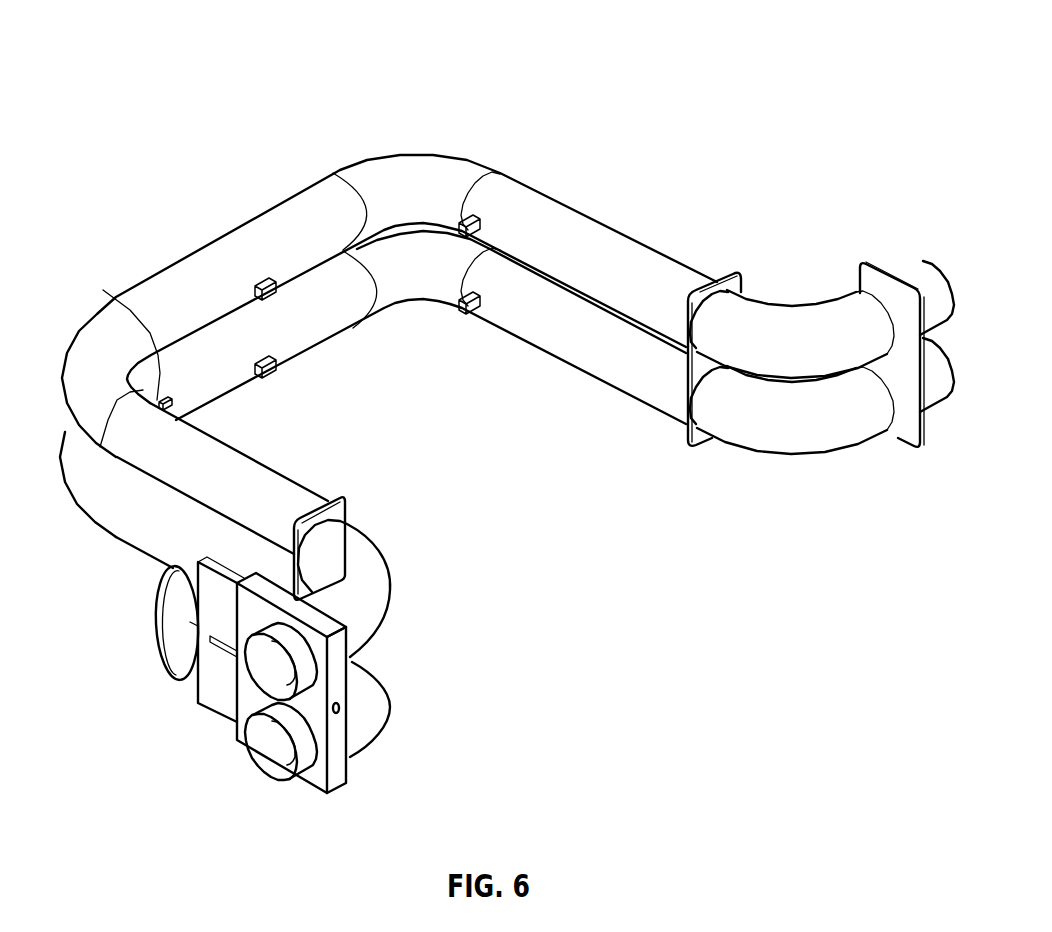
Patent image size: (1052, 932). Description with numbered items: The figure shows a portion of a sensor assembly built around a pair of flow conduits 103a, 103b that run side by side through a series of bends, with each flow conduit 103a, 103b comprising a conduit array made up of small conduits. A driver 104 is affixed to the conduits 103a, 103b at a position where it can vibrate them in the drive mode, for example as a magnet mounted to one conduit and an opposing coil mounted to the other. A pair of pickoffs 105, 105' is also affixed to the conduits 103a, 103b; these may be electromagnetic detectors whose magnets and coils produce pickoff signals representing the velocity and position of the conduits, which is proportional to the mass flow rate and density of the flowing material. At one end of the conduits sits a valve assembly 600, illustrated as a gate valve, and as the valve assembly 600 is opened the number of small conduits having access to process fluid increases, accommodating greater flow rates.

The valve assembly 600 is at (266, 815).
The conduit 103a is at (133, 538).
The conduit 103b is at (247, 478).
The driver 104 is at (267, 280).
The pickoff 105 is at (127, 328).
The pickoff 105' is at (440, 236).